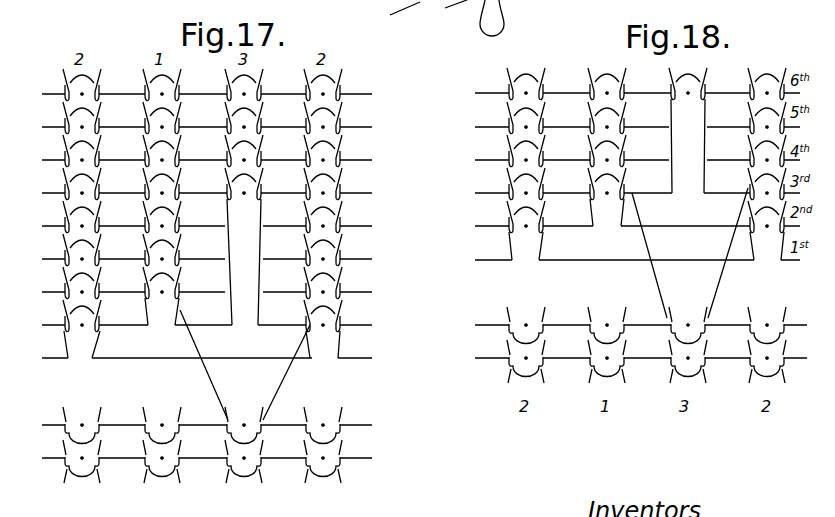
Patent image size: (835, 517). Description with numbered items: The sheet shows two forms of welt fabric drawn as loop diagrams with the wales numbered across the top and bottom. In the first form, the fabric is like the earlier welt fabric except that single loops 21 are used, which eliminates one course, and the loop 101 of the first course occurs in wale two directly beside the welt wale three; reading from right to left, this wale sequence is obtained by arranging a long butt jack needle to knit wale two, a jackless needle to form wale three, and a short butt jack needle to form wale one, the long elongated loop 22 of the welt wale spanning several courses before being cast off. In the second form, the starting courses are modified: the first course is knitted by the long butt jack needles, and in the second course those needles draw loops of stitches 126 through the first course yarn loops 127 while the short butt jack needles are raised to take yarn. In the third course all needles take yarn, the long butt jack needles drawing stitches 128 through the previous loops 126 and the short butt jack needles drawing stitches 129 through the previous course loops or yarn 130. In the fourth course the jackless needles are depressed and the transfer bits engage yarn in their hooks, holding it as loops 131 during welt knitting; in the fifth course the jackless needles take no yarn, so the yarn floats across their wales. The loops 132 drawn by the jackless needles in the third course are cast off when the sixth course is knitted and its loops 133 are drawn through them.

In FIG. 17, the single loops 21 is at (291, 378).
In FIG. 17, the elongated held loop 22 is at (266, 211).
In FIG. 17, the loop in the first course 101 is at (346, 341).
In FIG. 18, the loops of stitches 126 is at (527, 193).
In FIG. 18, the first course yarn loops 127 is at (527, 225).
In FIG. 18, the stitches 128 is at (527, 158).
In FIG. 18, the stitches 129 is at (607, 160).
In FIG. 18, the previous course loops or yarn 130 is at (607, 195).
In FIG. 18, the loops 131 is at (726, 281).
In FIG. 18, the loops 132 is at (685, 150).
In FIG. 18, the loops 133 is at (716, 80).